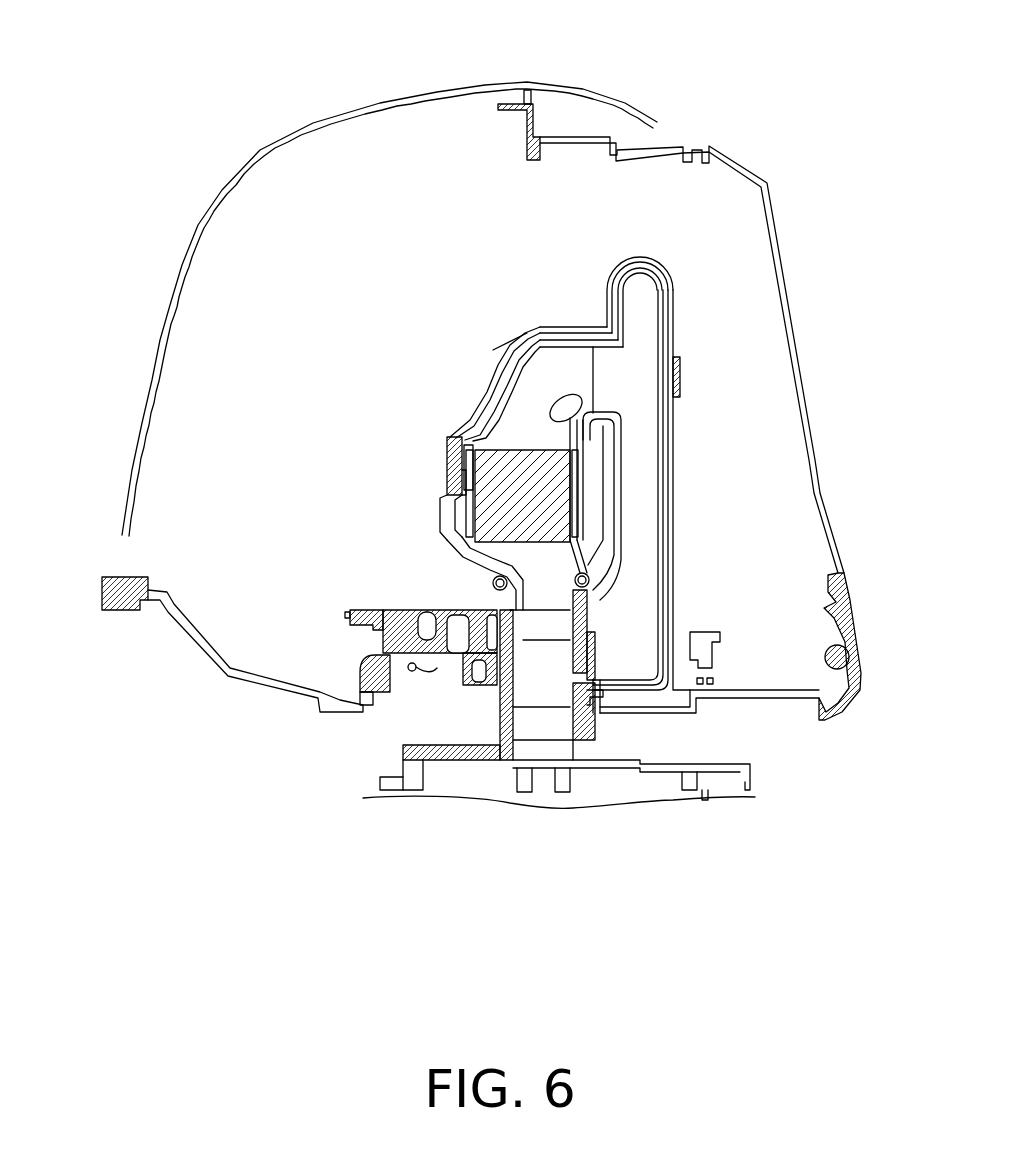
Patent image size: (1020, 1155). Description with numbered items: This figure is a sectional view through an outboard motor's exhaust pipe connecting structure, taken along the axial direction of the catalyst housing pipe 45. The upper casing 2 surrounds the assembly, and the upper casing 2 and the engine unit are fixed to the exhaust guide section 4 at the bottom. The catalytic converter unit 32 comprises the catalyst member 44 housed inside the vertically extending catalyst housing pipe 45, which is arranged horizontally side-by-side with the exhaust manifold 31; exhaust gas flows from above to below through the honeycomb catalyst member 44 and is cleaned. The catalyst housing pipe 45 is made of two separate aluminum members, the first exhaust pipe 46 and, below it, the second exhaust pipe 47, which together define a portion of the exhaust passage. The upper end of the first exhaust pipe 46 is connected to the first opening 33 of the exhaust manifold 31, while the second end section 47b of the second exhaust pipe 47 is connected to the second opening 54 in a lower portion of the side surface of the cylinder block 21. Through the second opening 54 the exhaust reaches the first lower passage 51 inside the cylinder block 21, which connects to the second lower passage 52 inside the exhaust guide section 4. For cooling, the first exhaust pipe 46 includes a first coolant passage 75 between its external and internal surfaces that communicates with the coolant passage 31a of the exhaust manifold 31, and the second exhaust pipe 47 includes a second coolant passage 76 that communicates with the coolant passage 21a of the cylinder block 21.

The upper casing 2 is at (407, 95).
The exhaust guide section 4 is at (752, 783).
The cylinder block 21 is at (507, 658).
The coolant passage of the cylinder block 21a is at (545, 612).
The exhaust manifold 31 is at (684, 423).
The coolant passage of the exhaust manifold 31a is at (617, 266).
The catalytic converter unit 32 is at (477, 407).
The first opening 33 is at (587, 372).
The catalyst member 44 is at (447, 490).
The catalyst housing pipe 45 is at (437, 513).
The first exhaust pipe 46 is at (438, 423).
The second exhaust pipe 47 is at (460, 550).
The second end section of the second exhaust pipe 47b is at (582, 630).
The first lower passage 51 is at (532, 632).
The second lower passage 52 is at (538, 742).
The second opening 54 is at (541, 596).
The first coolant passage 75 is at (497, 393).
The second coolant passage 76 is at (487, 565).